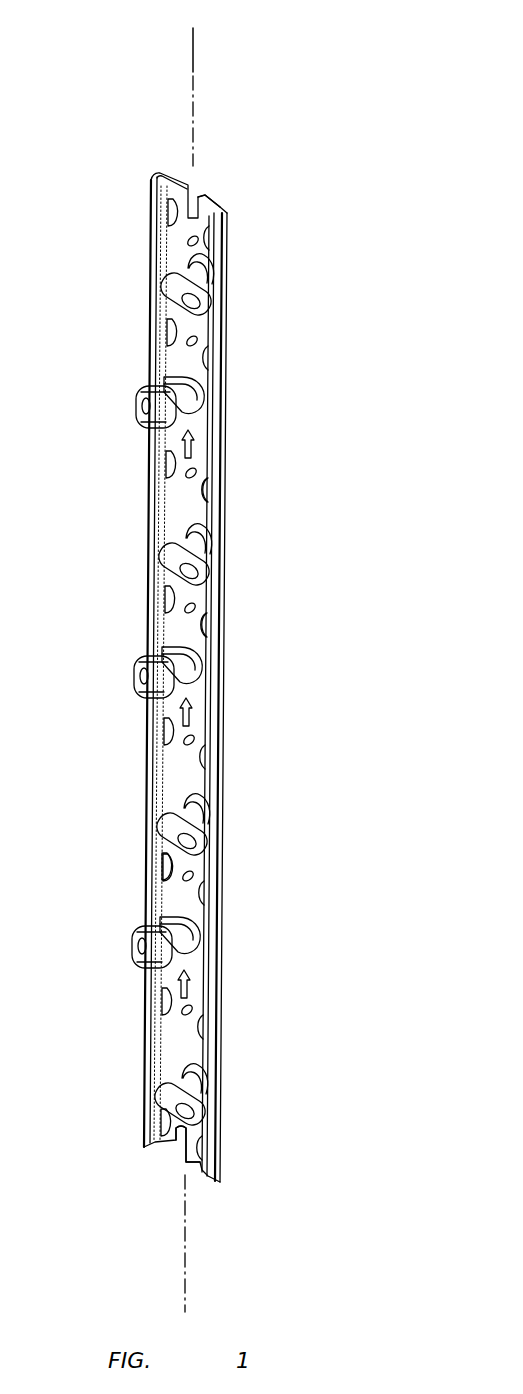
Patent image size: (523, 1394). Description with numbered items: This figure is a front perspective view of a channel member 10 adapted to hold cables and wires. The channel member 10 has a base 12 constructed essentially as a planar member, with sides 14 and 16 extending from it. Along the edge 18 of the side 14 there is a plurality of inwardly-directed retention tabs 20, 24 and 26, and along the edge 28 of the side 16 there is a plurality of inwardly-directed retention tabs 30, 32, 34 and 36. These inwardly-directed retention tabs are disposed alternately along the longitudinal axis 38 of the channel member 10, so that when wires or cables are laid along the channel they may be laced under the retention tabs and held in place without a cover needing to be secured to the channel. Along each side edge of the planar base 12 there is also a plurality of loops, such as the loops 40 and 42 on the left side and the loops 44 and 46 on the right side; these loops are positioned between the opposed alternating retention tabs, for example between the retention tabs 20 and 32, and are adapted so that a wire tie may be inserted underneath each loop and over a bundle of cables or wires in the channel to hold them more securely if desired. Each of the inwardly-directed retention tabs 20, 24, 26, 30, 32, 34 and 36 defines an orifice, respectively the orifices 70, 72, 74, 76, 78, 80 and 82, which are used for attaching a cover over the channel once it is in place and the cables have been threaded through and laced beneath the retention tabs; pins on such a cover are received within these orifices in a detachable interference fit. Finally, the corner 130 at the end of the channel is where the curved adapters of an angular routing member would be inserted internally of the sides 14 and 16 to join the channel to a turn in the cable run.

The channel member 10 is at (341, 336).
The base 12 is at (204, 199).
The side 14 is at (151, 181).
The side 16 is at (222, 213).
The edge of the side 18 is at (150, 476).
The retention tab 20 is at (150, 424).
The retention tab 24 is at (150, 692).
The retention tab 26 is at (152, 960).
The edge of the side 28 is at (217, 374).
The retention tab 30 is at (165, 290).
The retention tab 32 is at (165, 555).
The retention tab 34 is at (165, 822).
The retention tab 36 is at (163, 1093).
The longitudinal axis 38 is at (193, 66).
The loop 40 is at (162, 735).
The loop 42 is at (162, 868).
The loop 44 is at (208, 628).
The loop 46 is at (210, 488).
The orifice 70 is at (140, 408).
The orifice 72 is at (140, 678).
The orifice 74 is at (140, 950).
The orifice 76 is at (203, 308).
The orifice 78 is at (201, 578).
The orifice 80 is at (199, 848).
The orifice 82 is at (197, 1118).
The corner 130 is at (175, 1152).